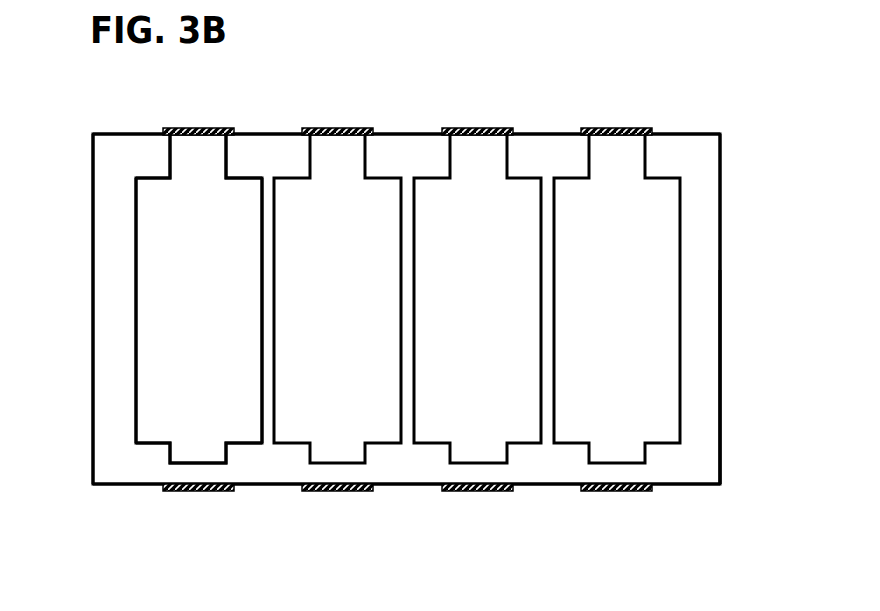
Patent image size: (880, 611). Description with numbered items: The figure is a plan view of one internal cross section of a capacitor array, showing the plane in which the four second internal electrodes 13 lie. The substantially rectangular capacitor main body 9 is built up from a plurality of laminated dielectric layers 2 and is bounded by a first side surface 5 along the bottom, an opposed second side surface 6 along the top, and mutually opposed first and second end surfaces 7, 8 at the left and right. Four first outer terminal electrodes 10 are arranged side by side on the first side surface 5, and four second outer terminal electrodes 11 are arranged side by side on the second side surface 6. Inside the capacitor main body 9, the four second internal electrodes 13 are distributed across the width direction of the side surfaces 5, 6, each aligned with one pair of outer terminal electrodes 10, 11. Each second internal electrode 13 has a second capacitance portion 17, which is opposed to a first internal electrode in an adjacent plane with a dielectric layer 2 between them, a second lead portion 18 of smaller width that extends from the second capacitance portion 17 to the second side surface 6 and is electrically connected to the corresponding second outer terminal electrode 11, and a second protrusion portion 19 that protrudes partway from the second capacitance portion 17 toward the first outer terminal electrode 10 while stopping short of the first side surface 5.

The dielectric layer 2 is at (713, 204).
The first side surface 5 is at (407, 485).
The second side surface 6 is at (403, 128).
The first end surface 7 is at (93, 255).
The second end surface 8 is at (722, 288).
The capacitor main body 9 is at (723, 131).
The first outer terminal electrode 10 is at (193, 492).
The second outer terminal electrode 11 is at (188, 128).
The second internal electrode 13 is at (128, 330).
The second capacitance portion 17 is at (150, 387).
The second lead portion 18 is at (193, 163).
The second protrusion portion 19 is at (173, 457).